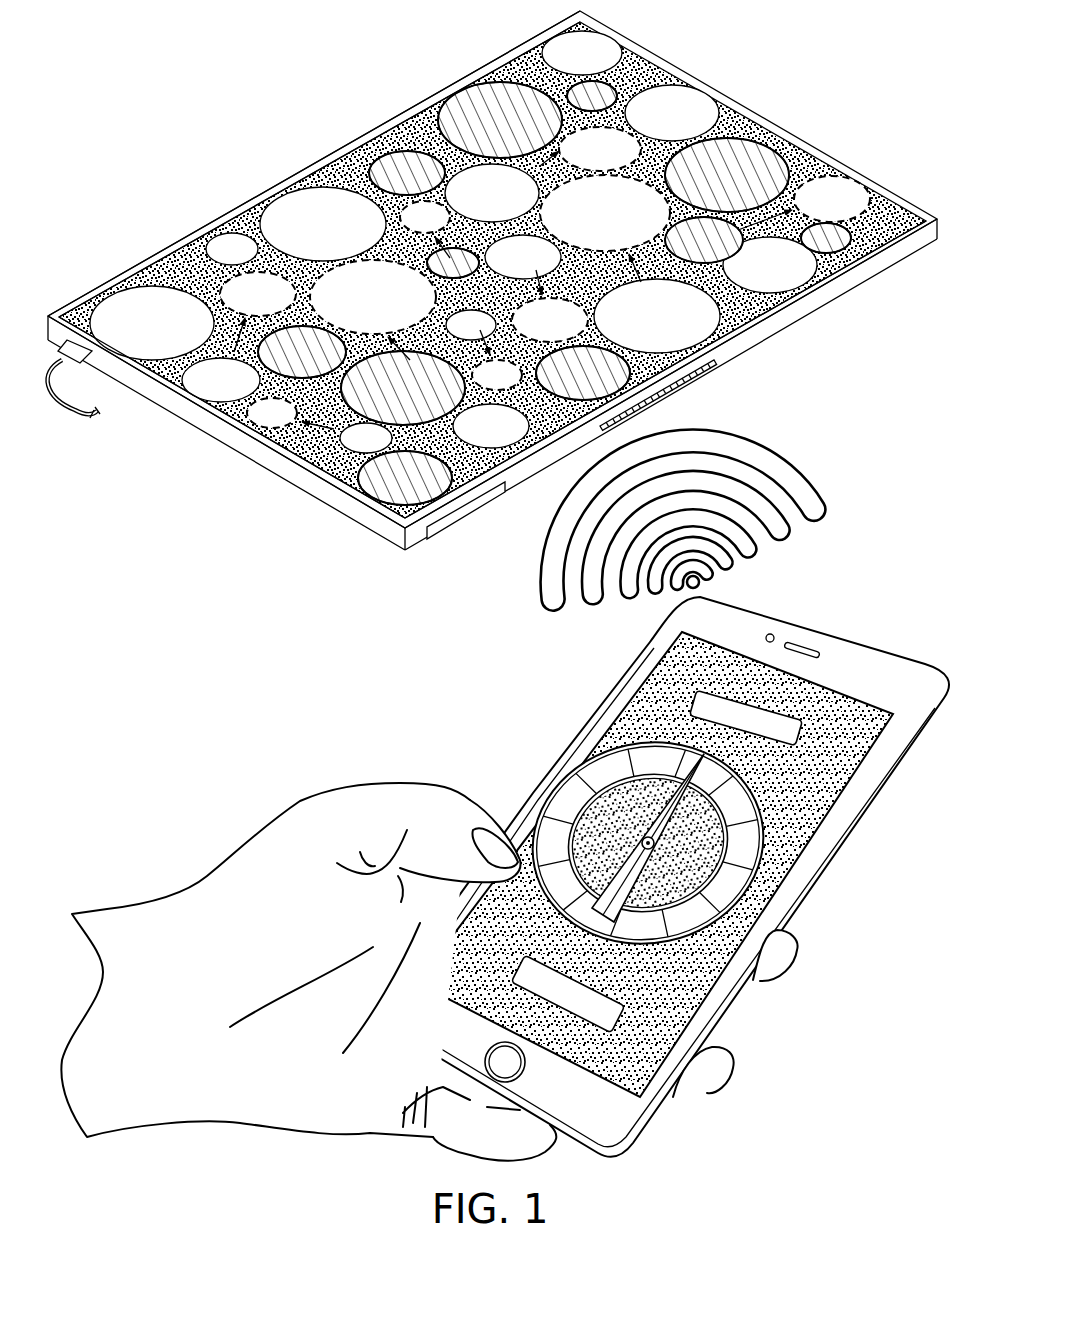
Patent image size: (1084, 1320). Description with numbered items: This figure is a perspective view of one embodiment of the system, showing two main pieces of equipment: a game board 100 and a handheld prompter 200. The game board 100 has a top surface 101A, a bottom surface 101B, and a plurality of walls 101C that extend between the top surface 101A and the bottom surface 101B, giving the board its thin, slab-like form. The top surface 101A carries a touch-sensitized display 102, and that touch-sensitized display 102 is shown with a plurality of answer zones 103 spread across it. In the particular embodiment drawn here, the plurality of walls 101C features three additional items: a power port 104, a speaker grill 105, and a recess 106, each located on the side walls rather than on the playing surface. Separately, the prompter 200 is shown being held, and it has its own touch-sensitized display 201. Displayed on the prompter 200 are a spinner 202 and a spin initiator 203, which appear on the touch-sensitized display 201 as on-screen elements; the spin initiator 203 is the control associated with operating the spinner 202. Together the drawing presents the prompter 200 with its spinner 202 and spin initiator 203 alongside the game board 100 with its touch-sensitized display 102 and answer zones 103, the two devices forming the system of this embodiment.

The game board 100 is at (764, 108).
The top surface 101A is at (197, 257).
The bottom surface 101B is at (224, 451).
The plurality of walls 101C is at (877, 263).
The touch-sensitized display 102 is at (299, 446).
The answer zones 103 is at (480, 122).
The power port 104 is at (66, 400).
The speaker grill 105 is at (702, 372).
The recess 106 is at (440, 536).
The prompter 200 is at (666, 877).
The touch-sensitized display 201 is at (640, 706).
The spinner 202 is at (580, 777).
The spin initiator 203 is at (630, 1023).